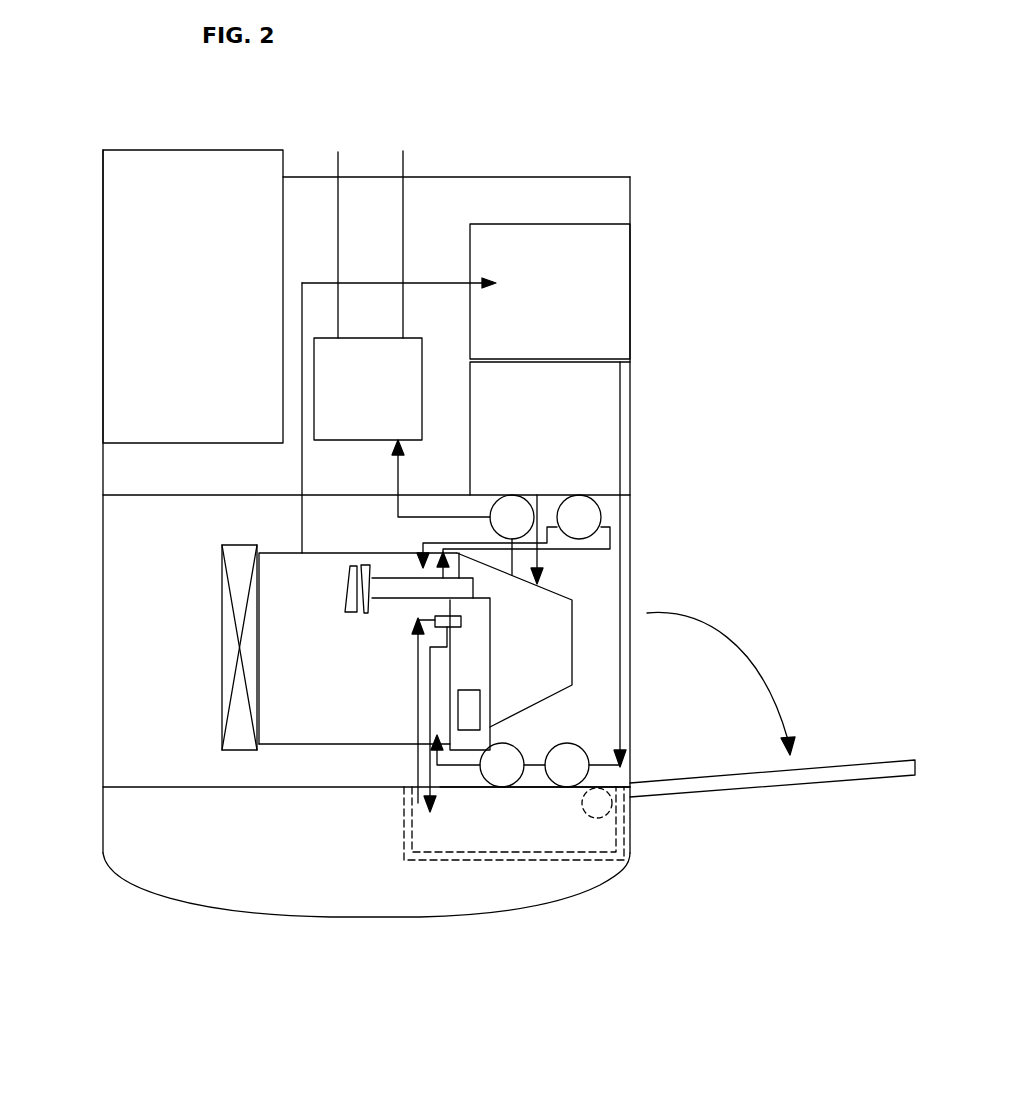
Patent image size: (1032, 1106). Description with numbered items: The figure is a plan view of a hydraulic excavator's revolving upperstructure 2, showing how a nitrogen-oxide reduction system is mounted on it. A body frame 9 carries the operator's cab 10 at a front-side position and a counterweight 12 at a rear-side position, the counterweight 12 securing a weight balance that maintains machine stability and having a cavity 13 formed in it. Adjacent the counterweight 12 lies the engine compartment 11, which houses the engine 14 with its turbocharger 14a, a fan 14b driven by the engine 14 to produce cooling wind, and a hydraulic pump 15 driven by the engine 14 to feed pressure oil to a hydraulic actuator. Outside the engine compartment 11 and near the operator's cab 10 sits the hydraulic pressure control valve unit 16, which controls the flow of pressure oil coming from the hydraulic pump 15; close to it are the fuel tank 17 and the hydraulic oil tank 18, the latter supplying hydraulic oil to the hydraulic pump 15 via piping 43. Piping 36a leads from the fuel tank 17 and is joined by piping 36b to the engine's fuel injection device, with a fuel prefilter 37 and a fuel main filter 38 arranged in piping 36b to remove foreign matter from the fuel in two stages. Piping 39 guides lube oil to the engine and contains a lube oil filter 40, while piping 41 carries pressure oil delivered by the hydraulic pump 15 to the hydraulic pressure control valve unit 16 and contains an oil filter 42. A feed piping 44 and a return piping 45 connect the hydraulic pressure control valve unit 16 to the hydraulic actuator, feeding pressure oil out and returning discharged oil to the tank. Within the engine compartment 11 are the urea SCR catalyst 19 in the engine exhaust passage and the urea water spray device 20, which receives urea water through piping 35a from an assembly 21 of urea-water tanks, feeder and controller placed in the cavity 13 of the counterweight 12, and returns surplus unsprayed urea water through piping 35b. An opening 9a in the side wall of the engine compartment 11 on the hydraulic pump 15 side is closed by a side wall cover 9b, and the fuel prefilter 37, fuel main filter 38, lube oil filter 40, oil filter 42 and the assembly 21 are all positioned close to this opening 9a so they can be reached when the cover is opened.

The revolving upperstructure 2 is at (533, 170).
The body frame 9 is at (102, 602).
The opening 9a is at (625, 598).
The side wall cover 9b is at (845, 795).
The operator's cab 10 is at (197, 148).
The engine compartment 11 is at (172, 673).
The counterweight 12 is at (357, 919).
The cavity 13 is at (532, 770).
The engine 14 is at (297, 723).
The turbocharger 14a is at (415, 585).
The fan 14b is at (225, 578).
The hydraulic pump 15 is at (555, 614).
The hydraulic pressure control valve unit 16 is at (379, 365).
The fuel tank 17 is at (617, 283).
The hydraulic oil tank 18 is at (609, 392).
The urea SCR catalyst 19 is at (474, 708).
The urea water spray device 20 is at (480, 650).
The assembly 21 is at (473, 845).
The piping 35a is at (418, 673).
The piping 35b is at (428, 712).
The piping 36a is at (620, 737).
The piping 36b is at (547, 775).
The fuel prefilter 37 is at (572, 775).
The fuel main filter 38 is at (497, 772).
The piping 39 is at (612, 533).
The lube oil filter 40 is at (588, 517).
The piping 41 is at (405, 480).
The oil filter 42 is at (518, 513).
The piping 43 is at (542, 570).
The feed piping 44 is at (338, 158).
The return piping 45 is at (403, 162).